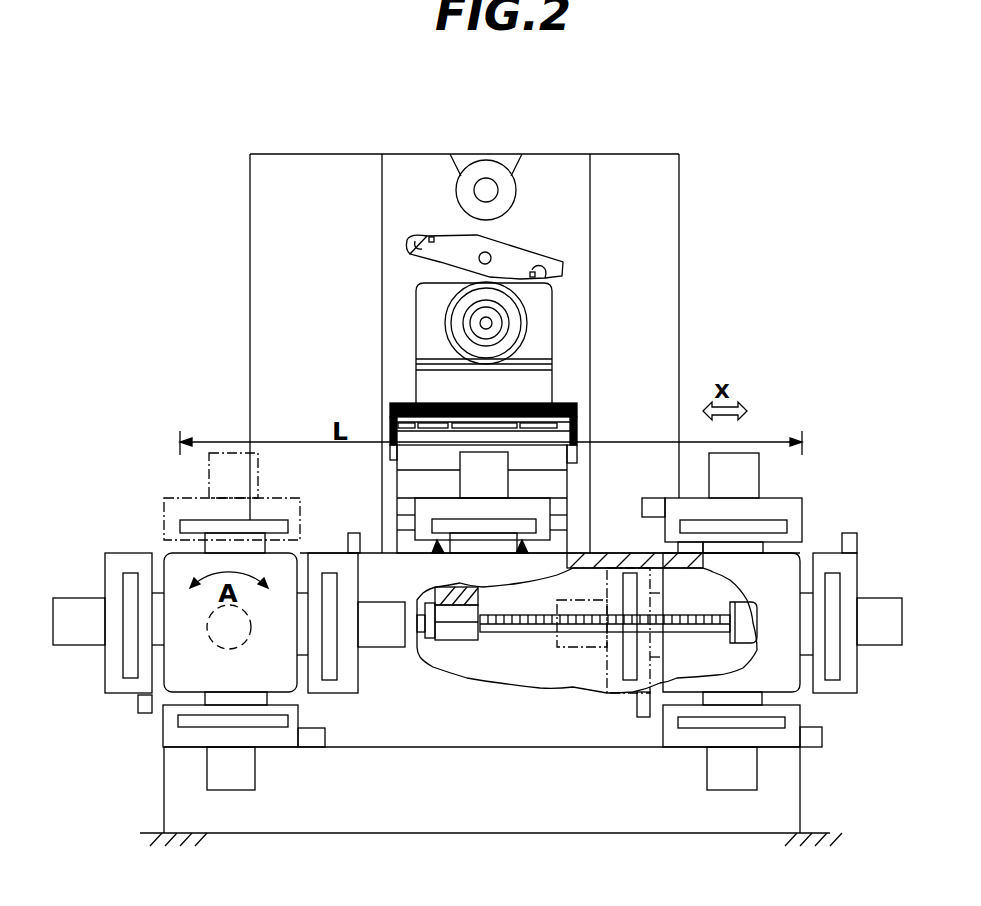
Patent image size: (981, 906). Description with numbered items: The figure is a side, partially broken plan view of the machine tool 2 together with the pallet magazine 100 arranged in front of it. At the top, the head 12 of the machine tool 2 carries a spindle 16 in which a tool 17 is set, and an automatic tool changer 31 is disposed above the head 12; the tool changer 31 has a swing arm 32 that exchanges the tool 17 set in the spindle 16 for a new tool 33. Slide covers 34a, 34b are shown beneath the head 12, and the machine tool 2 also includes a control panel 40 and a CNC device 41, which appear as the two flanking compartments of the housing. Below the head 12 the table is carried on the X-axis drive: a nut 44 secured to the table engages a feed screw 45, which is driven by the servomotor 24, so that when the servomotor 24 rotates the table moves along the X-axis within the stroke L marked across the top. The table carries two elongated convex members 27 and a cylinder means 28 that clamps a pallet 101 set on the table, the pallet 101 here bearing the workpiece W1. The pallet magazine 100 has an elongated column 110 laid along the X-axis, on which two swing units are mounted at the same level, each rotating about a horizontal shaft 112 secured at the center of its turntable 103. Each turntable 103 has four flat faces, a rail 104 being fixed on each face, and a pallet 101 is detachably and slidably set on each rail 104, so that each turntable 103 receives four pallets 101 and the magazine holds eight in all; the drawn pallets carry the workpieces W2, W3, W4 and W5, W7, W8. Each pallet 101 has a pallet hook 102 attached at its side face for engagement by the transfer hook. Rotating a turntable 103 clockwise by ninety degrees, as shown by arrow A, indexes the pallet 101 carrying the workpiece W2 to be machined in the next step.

The machine tool 2 is at (690, 177).
The head 12 is at (552, 296).
The spindle 16 is at (497, 337).
The tool 17 is at (490, 323).
The servomotor 24 is at (733, 643).
The elongated convex members 27 is at (437, 547).
The cylinder means 28 is at (527, 546).
The automatic tool changer 31 is at (530, 182).
The swing arm 32 is at (446, 238).
The new tool 33 is at (485, 190).
The slide cover 34a is at (577, 407).
The slide cover 34b is at (557, 456).
The control panel 40 is at (630, 153).
The CNC device 41 is at (322, 153).
The nut 44 is at (455, 628).
The feed screw 45 is at (525, 633).
The pallet magazine 100 is at (884, 526).
The pallet 101 is at (110, 680).
The pallet hook 102 is at (355, 537).
The turntable 103 is at (292, 683).
The rail 104 is at (130, 577).
The column 110 is at (173, 792).
The horizontal shaft 112 is at (227, 649).
The workpiece W1 is at (468, 484).
The workpiece W2 is at (73, 603).
The workpiece W3 is at (242, 783).
The workpiece W4 is at (378, 643).
The workpiece W5 is at (750, 468).
The workpiece W7 is at (715, 775).
The workpiece W8 is at (882, 610).